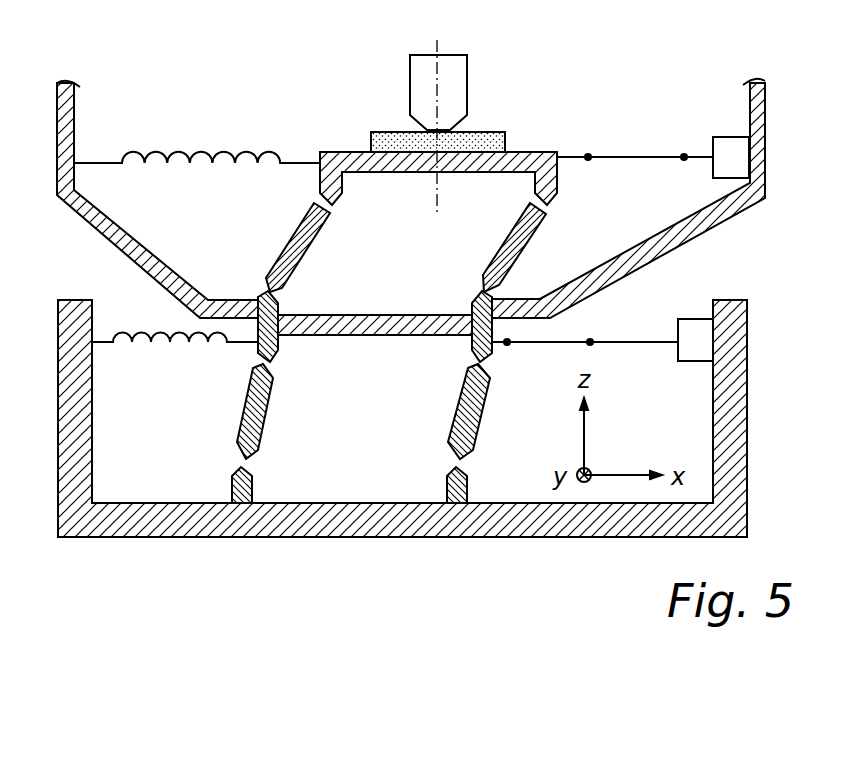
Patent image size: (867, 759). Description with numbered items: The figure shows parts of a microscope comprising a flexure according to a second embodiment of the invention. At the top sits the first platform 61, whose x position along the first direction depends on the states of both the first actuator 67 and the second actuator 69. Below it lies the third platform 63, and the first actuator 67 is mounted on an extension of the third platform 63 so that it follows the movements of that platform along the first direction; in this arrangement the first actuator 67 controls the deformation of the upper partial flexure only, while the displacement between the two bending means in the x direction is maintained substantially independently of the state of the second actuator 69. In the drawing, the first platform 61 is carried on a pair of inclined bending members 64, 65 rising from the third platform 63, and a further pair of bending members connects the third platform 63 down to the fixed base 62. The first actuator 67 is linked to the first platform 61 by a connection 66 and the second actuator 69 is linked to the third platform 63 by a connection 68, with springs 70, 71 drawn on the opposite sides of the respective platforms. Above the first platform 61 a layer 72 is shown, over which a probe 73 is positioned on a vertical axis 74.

The first platform 61 is at (382, 173).
The base 62 is at (347, 538).
The third platform 63 is at (367, 337).
The left flexure arm 64 is at (288, 243).
The right flexure arm 65 is at (638, 247).
The upper wire 66 is at (615, 155).
The first actuator 67 is at (727, 137).
The lower wire 68 is at (547, 343).
The second actuator 69 is at (693, 362).
The upper spring 70 is at (178, 148).
The lower spring 71 is at (163, 347).
The sample layer 72 is at (495, 130).
The probe 73 is at (468, 68).
The probe axis 74 is at (437, 42).